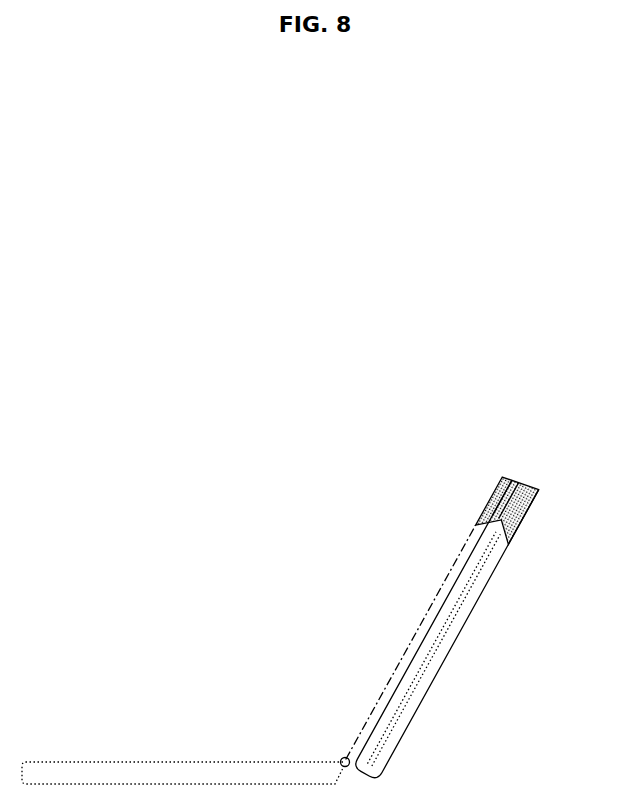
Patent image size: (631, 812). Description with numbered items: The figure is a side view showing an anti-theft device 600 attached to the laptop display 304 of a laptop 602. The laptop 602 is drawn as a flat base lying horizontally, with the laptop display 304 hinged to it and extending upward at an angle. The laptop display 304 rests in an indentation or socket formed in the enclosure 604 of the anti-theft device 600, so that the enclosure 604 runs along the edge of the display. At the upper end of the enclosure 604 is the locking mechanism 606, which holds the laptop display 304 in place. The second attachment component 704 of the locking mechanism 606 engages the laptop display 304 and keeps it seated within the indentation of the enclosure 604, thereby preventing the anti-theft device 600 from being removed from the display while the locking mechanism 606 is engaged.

The anti-theft device 600 is at (452, 595).
The laptop 602 is at (90, 767).
The enclosure 604 is at (385, 750).
The locking mechanism 606 is at (539, 491).
The laptop display 304 is at (379, 713).
The second attachment component 704 is at (512, 481).